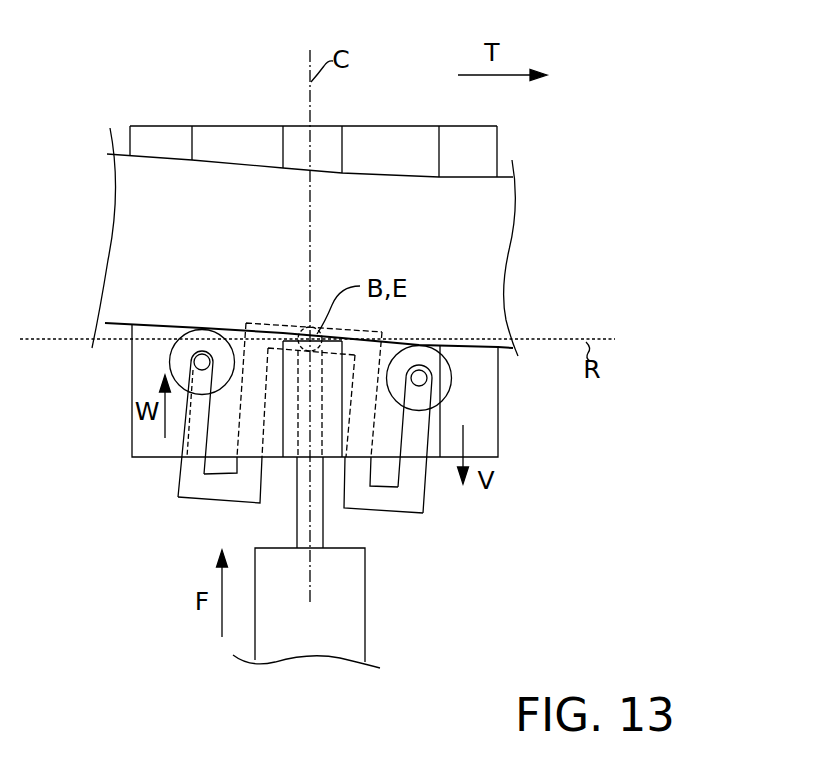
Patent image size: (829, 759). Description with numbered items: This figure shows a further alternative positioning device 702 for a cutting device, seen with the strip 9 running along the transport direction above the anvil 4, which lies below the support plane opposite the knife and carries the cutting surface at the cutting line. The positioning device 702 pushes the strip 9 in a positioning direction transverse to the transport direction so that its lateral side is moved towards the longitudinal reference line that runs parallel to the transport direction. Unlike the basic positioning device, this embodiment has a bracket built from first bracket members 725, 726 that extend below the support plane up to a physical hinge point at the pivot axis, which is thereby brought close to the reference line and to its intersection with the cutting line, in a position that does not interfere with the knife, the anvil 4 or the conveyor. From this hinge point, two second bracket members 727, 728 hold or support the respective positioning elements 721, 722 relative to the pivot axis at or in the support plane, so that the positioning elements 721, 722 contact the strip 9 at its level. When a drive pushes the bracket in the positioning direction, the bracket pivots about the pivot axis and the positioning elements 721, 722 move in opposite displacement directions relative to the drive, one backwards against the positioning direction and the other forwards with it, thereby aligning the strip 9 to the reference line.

The anvil 4 is at (480, 442).
The strip 9 is at (497, 319).
The positioning device 702 is at (143, 582).
The positioning element 721 is at (447, 377).
The positioning element 722 is at (177, 361).
The first bracket member 725 is at (238, 490).
The first bracket member 726 is at (375, 505).
The second bracket member 727 is at (413, 488).
The second bracket member 728 is at (187, 423).